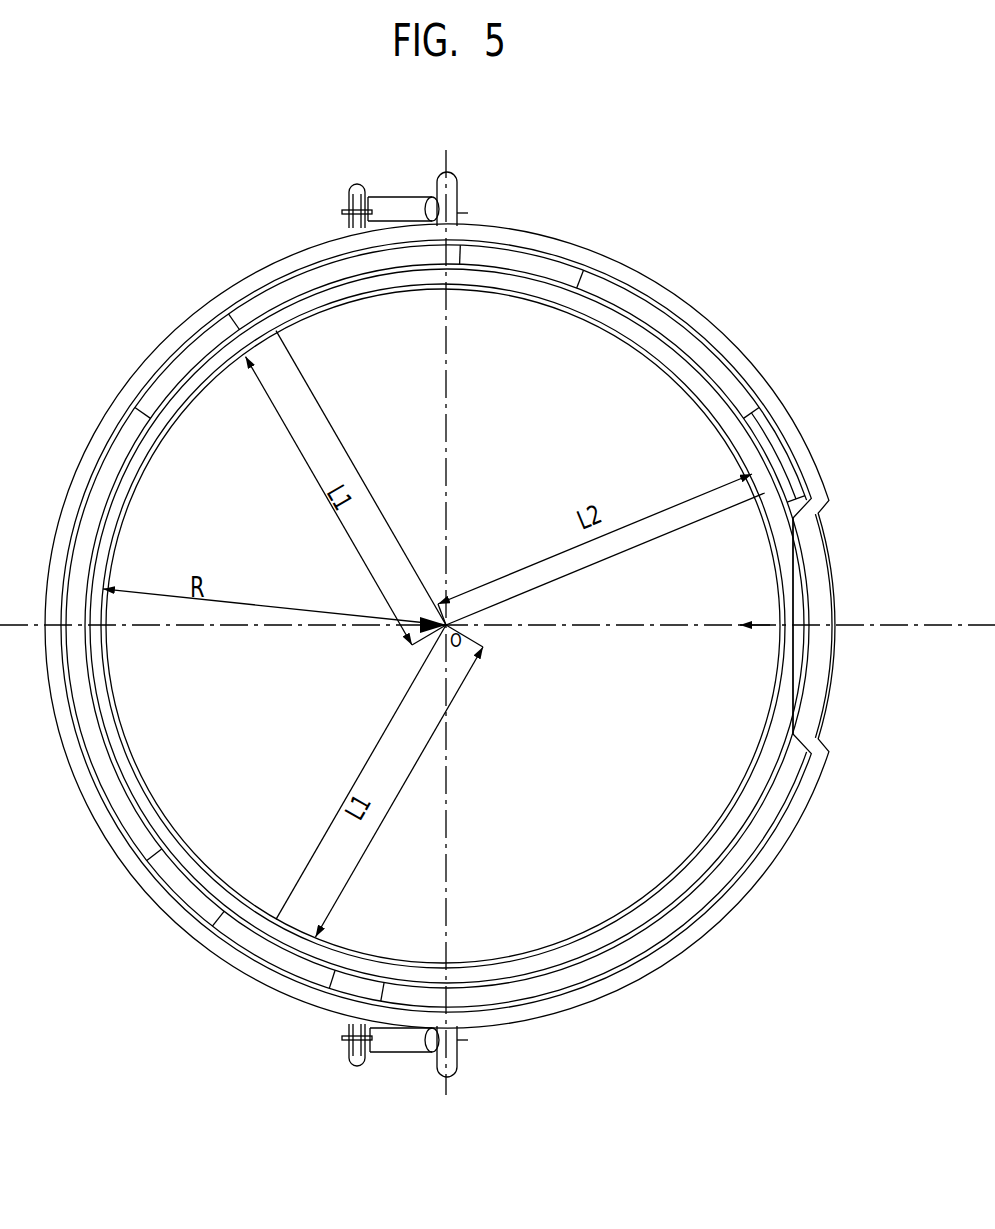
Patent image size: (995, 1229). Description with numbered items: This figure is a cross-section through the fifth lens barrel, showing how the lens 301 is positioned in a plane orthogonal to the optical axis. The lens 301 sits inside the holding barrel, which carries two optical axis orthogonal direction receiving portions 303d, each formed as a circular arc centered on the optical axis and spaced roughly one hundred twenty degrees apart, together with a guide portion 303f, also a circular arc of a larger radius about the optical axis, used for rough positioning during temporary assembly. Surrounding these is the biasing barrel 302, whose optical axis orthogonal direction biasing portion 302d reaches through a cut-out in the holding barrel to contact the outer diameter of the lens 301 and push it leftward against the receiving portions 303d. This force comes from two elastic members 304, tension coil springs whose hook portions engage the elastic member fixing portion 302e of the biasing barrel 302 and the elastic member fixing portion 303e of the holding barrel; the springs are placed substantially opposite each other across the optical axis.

The lens 301 is at (212, 433).
The biasing barrel 302 is at (651, 284).
The optical axis orthogonal direction biasing portion 302d is at (784, 556).
The elastic member fixing portion 302e is at (454, 1050).
The optical axis orthogonal direction receiving portion 303d is at (248, 332).
The elastic member fixing portion 303e is at (368, 1042).
The guide portion 303f is at (762, 456).
The elastic member 304 is at (406, 208).